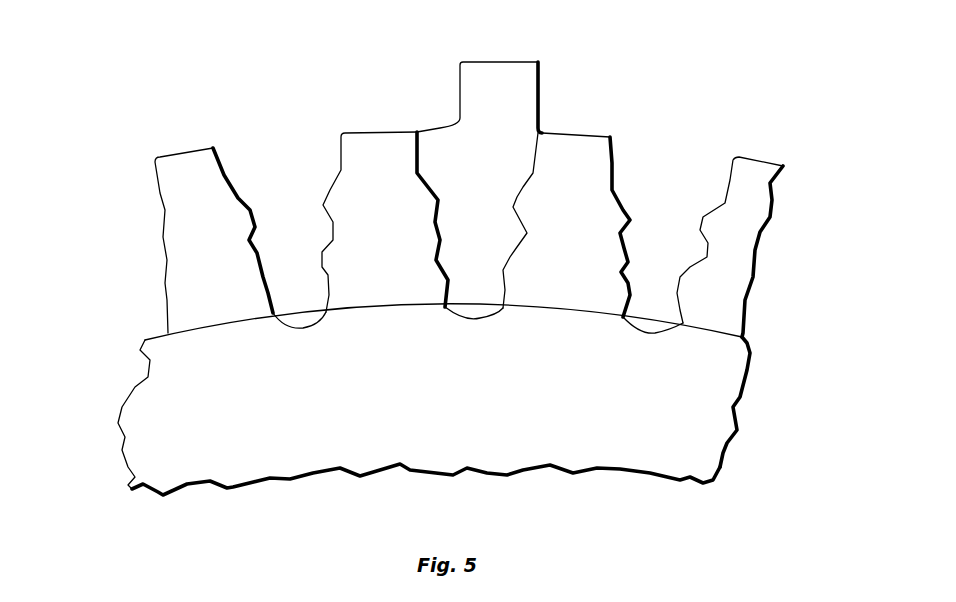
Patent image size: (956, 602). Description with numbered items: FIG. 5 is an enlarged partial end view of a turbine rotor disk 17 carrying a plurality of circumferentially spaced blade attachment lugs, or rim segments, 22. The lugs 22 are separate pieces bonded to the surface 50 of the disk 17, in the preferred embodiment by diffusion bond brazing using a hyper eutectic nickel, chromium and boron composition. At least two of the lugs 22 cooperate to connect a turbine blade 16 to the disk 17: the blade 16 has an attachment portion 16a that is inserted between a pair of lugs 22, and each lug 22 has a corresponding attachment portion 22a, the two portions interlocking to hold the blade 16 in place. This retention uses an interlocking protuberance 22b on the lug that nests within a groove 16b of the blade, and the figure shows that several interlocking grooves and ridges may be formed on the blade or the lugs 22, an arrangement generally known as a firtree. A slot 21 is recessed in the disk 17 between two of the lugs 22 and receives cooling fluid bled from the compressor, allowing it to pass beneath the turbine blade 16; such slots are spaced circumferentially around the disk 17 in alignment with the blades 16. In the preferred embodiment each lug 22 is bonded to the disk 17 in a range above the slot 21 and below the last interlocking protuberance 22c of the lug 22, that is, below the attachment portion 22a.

The turbine blade 16 is at (488, 78).
The attachment portion of blade 16a is at (517, 205).
The groove 16b is at (432, 222).
The rotor disk 17 is at (690, 412).
The slot 21 is at (277, 318).
The blade attachment lug 22 is at (190, 158).
The attachment portion of lug 22a is at (530, 258).
The interlocking protuberance 22b is at (257, 250).
The last interlocking protuberance 22c is at (542, 137).
The surface of disk 50 is at (178, 333).